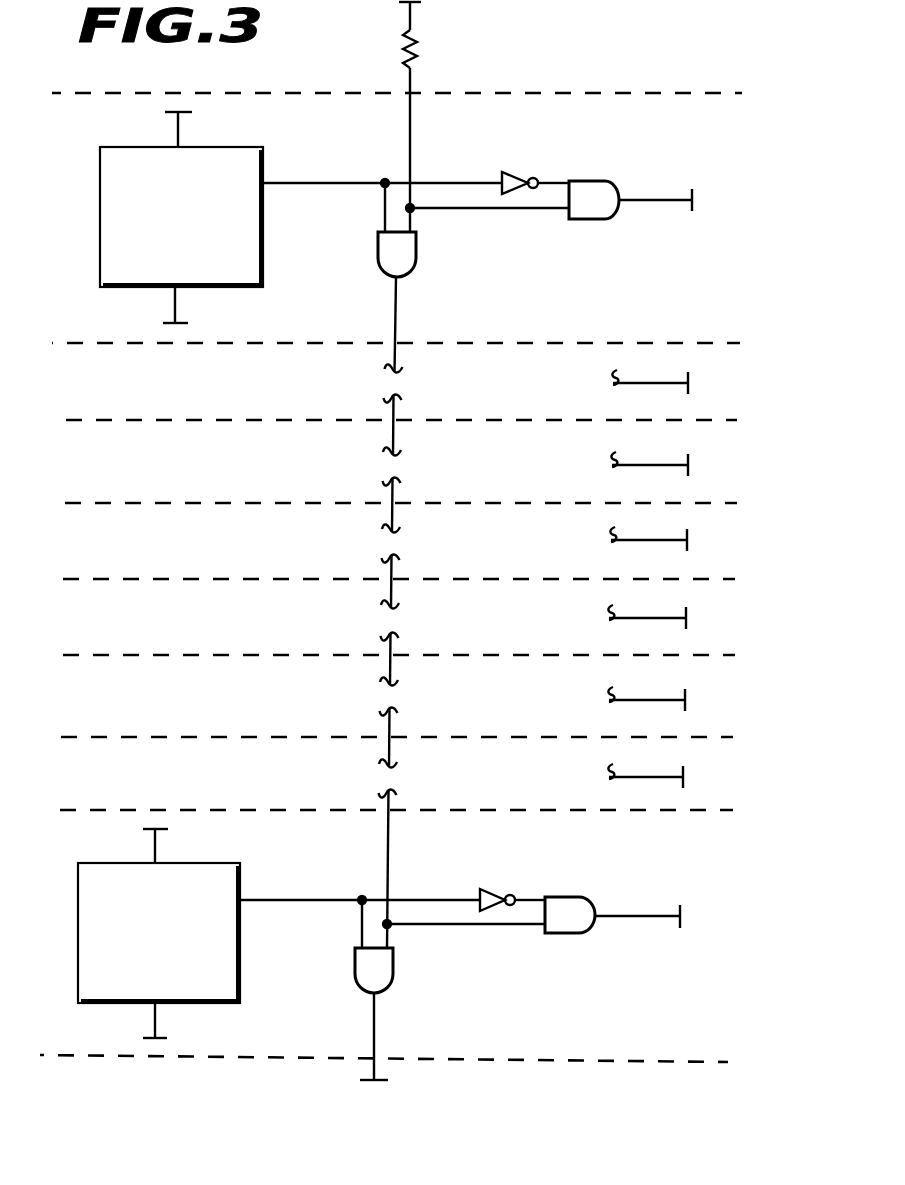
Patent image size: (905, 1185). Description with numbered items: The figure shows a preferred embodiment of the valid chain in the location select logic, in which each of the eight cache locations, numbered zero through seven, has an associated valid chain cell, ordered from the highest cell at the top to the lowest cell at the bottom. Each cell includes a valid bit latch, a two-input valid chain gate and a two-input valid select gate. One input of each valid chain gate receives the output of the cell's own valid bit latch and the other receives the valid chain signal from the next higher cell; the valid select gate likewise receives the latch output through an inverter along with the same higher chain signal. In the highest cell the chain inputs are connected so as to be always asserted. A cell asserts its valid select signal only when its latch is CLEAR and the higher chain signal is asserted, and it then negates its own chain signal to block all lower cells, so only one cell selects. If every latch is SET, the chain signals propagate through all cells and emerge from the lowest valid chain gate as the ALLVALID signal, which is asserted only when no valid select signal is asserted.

The ALLVALID signal ALLVALID is at (370, 1085).